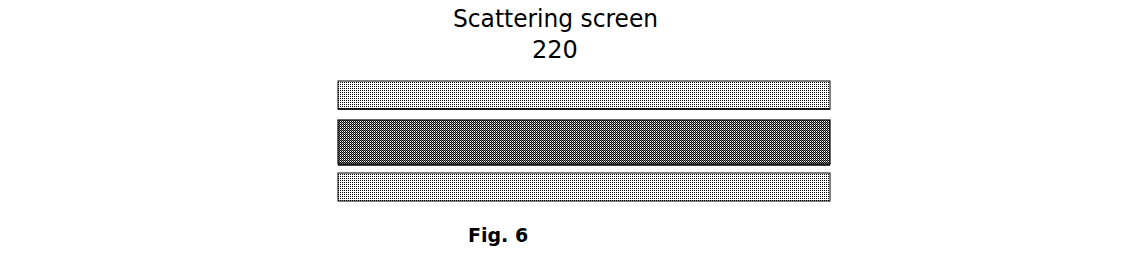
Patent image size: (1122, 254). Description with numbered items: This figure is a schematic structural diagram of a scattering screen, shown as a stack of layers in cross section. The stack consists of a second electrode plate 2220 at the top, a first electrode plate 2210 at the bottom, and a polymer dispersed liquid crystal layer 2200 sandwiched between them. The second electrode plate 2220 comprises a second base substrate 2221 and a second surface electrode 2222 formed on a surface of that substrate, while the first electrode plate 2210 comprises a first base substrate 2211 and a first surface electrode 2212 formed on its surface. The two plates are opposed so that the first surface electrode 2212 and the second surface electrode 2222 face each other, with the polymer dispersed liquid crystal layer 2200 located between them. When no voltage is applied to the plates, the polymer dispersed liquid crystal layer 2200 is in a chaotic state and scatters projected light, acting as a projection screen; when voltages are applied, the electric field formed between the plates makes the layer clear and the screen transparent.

The polymer dispersed liquid crystal layer 2200 is at (829, 142).
The second electrode plate 2220 is at (137, 45).
The second base substrate 2221 is at (338, 91).
The second surface electrode 2222 is at (338, 112).
The first electrode plate 2210 is at (137, 133).
The first surface electrode 2212 is at (338, 166).
The first base substrate 2211 is at (338, 193).